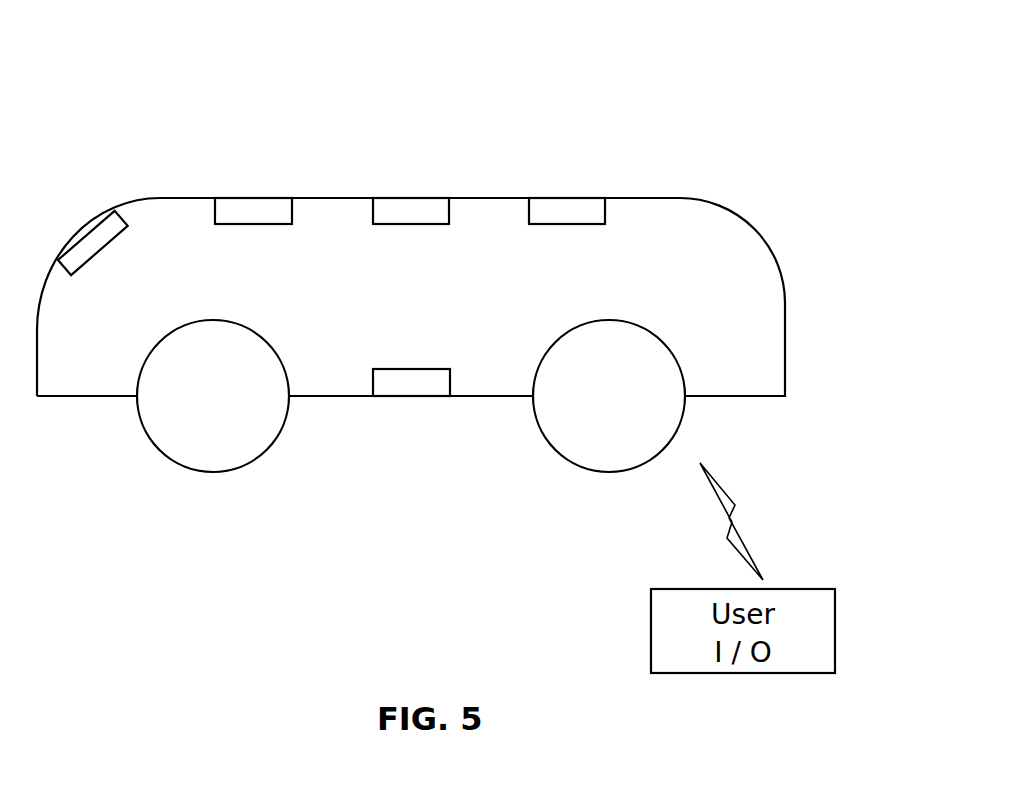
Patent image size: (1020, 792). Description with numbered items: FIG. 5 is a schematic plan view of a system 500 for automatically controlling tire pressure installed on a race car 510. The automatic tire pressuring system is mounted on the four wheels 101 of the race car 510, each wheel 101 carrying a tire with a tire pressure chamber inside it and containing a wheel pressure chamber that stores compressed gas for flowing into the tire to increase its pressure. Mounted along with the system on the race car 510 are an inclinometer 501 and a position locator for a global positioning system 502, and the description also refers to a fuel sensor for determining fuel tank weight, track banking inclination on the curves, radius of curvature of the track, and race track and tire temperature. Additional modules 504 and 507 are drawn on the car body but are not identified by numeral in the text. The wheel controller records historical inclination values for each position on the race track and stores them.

The vehicle system 500 is at (178, 74).
The race car 510 is at (676, 238).
The wheel 101 is at (200, 448).
The sensor 507 is at (88, 232).
The inclinometer 501 is at (255, 210).
The position locator for a global positioning system 502 is at (412, 210).
The sensor module 504 is at (568, 210).